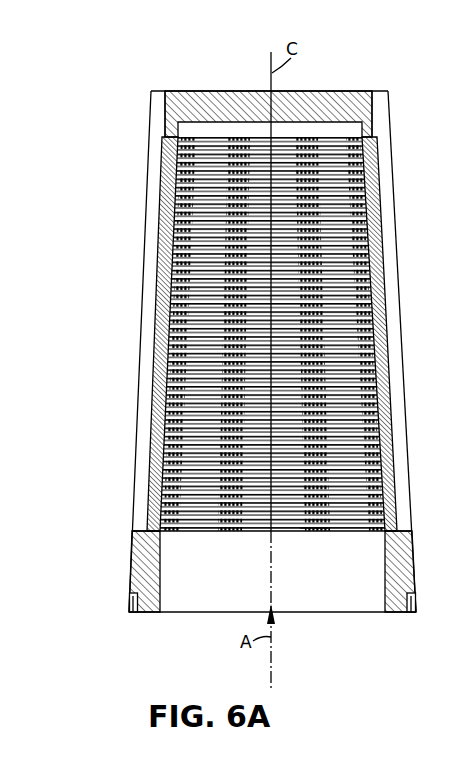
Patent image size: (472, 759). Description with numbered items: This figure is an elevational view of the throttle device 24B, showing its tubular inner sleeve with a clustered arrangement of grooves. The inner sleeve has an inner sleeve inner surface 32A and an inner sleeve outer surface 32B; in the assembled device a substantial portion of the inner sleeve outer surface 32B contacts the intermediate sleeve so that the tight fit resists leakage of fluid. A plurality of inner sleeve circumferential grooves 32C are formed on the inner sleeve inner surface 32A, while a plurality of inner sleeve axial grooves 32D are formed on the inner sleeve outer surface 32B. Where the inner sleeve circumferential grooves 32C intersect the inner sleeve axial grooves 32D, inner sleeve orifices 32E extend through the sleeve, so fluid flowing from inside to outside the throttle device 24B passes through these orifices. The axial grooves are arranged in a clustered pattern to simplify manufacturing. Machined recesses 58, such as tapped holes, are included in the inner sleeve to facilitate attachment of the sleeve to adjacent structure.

The throttle device 24B is at (155, 65).
The inner sleeve inner surface 32A is at (160, 590).
The inner sleeve outer surface 32B is at (135, 547).
The inner sleeve circumferential grooves 32C is at (170, 150).
The inner sleeve axial grooves 32D is at (157, 230).
The inner sleeve orifices 32E is at (325, 531).
The recesses 58 is at (133, 613).